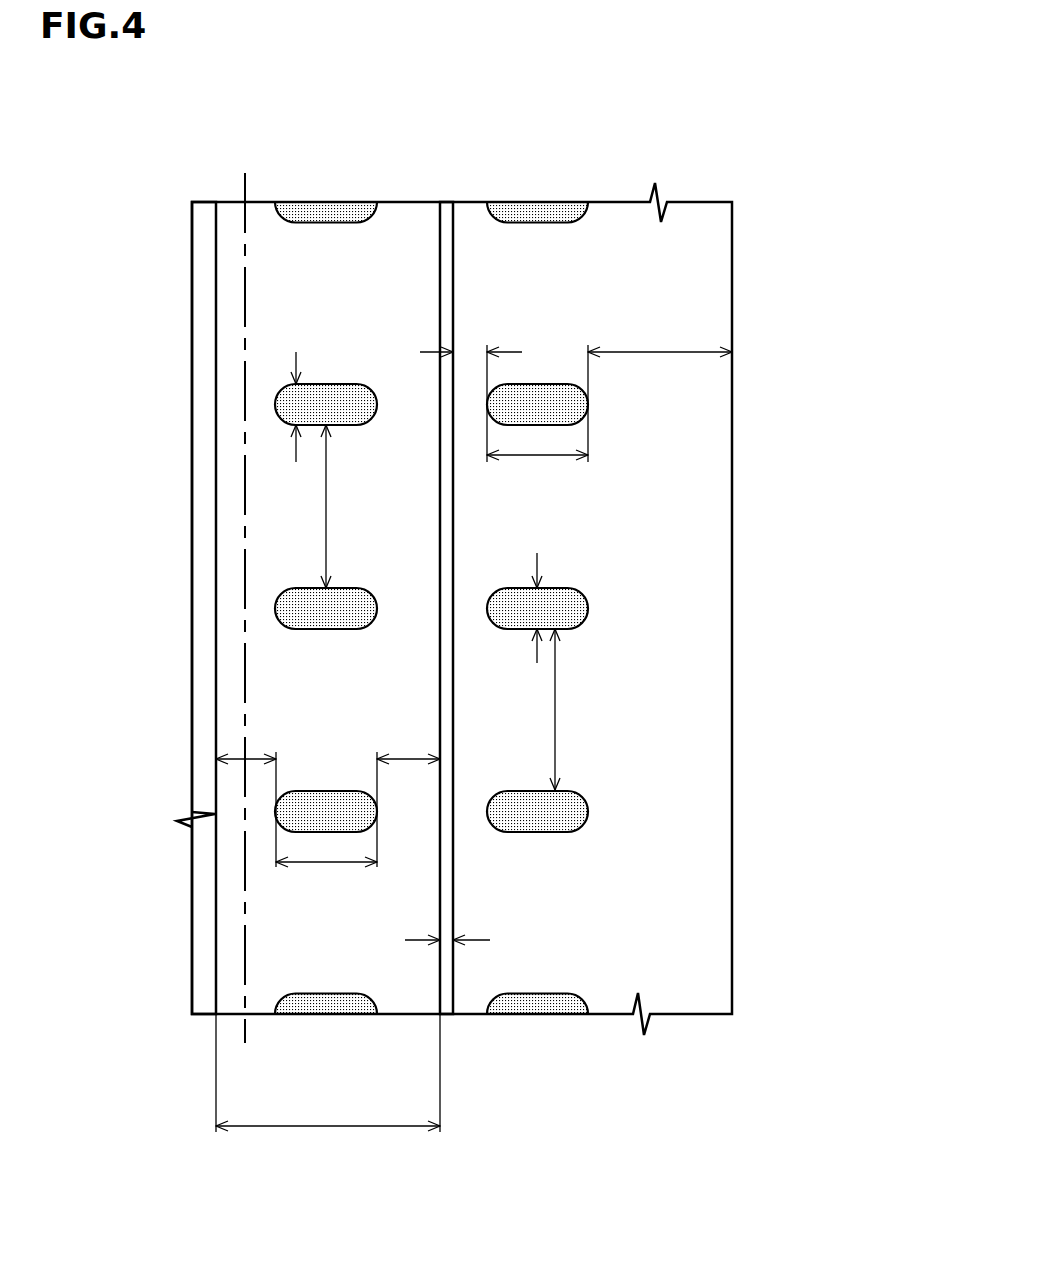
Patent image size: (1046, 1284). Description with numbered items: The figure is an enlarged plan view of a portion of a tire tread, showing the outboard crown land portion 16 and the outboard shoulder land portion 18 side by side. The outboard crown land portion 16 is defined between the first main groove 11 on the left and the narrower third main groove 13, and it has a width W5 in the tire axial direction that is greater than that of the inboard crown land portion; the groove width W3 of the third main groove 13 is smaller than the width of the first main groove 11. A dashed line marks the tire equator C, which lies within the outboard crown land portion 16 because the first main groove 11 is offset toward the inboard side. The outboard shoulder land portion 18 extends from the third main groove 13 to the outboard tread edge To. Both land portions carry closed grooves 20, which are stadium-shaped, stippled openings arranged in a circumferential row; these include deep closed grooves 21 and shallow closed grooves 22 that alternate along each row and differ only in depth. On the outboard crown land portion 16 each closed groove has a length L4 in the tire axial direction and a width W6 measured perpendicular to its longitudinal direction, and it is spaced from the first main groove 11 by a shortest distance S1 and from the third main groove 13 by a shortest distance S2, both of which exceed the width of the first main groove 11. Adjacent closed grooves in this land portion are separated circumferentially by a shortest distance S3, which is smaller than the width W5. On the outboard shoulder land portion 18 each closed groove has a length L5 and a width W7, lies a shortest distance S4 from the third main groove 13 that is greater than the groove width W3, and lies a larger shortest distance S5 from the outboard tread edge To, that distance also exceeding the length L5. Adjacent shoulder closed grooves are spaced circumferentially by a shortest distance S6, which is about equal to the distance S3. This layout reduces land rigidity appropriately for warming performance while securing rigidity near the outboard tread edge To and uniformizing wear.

The first main groove 11 is at (205, 228).
The third main groove 13 is at (447, 246).
The outboard crown land portion 16 is at (323, 258).
The outboard shoulder land portion 18 is at (608, 258).
The closed grooves 20 is at (464, 608).
The deep closed grooves 21 is at (314, 606).
The shallow closed grooves 22 is at (327, 810).
The tire equator C is at (244, 592).
The outboard tread edge To is at (732, 224).
The width of outboard crown closed groove W6 is at (296, 404).
The width of outboard shoulder closed groove W7 is at (540, 608).
The groove width of third main groove W3 is at (447, 942).
The width of outboard crown land portion W5 is at (328, 1089).
The shortest distance from first main groove edge to outboard crown closed groove S1 is at (233, 755).
The shortest distance from third main groove edge to outboard crown closed groove S2 is at (408, 743).
The shortest circumferential distance between adjacent outboard crown closed grooves S3 is at (326, 505).
The shortest distance from third main groove edge to outboard shoulder closed groove S4 is at (471, 335).
The shortest distance from outboard tread edge to outboard shoulder closed groove S5 is at (660, 335).
The shortest circumferential distance between adjacent outboard shoulder closed groo S6 is at (555, 710).
The length of outboard crown closed groove L4 is at (326, 880).
The length of outboard shoulder closed groove L5 is at (537, 418).